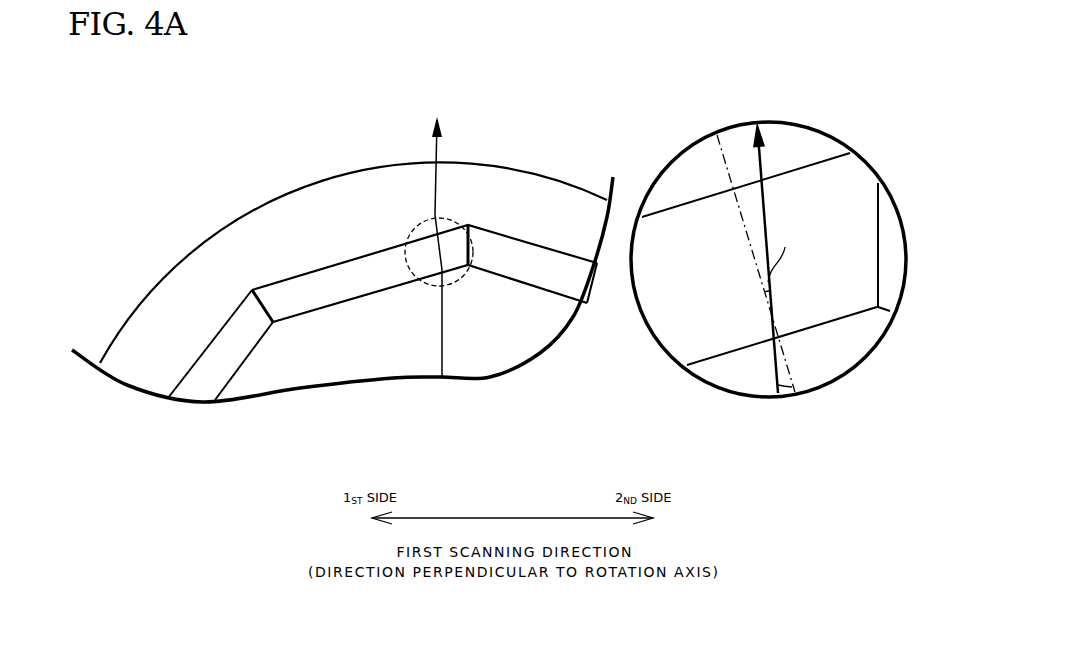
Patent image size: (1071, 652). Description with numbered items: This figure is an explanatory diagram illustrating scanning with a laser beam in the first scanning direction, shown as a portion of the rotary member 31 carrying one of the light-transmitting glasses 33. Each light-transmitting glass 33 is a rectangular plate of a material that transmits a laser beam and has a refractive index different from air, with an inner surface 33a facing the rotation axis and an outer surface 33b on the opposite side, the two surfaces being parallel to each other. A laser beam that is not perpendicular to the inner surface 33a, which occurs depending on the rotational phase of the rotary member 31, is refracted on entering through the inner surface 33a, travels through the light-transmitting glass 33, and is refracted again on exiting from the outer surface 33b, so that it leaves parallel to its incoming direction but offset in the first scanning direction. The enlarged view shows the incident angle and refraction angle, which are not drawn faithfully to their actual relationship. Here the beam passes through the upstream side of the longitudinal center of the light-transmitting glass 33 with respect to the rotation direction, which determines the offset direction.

The rotary member 31 is at (148, 318).
The light-transmitting glass 33 is at (537, 243).
The inner surface 33a is at (345, 300).
The outer surface 33b is at (347, 257).